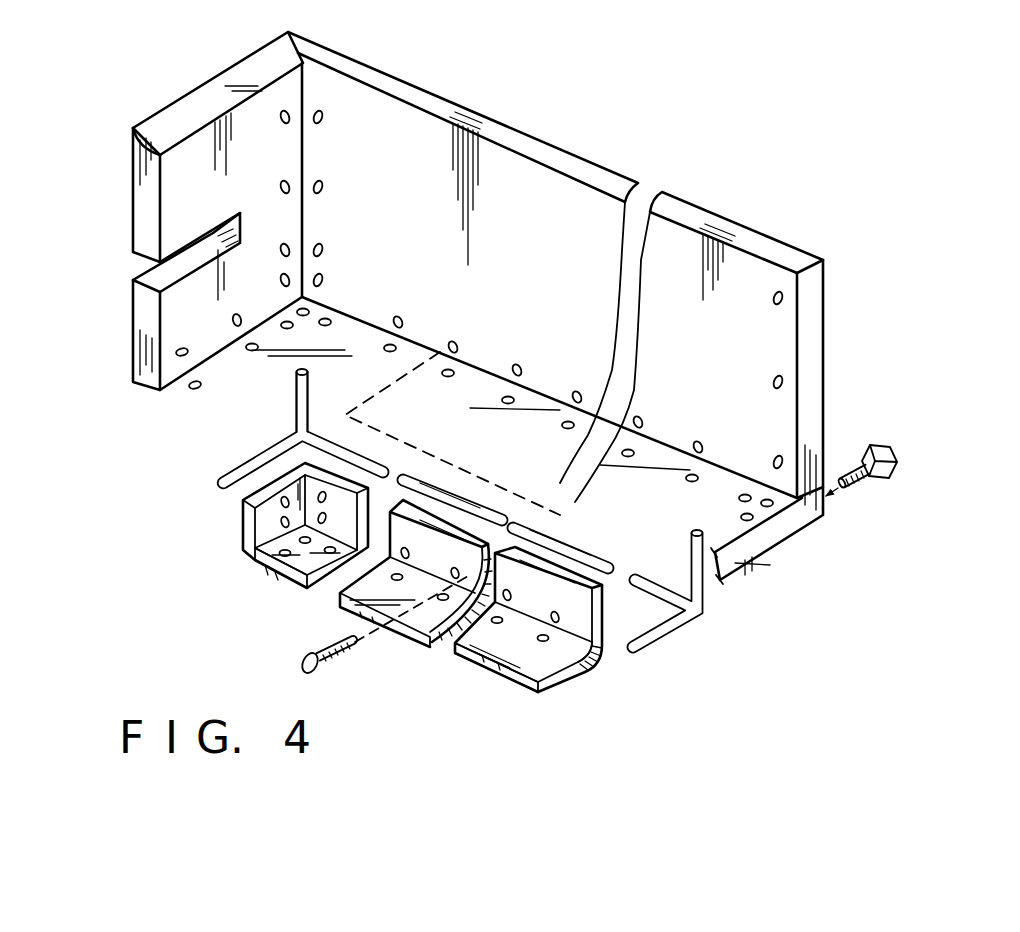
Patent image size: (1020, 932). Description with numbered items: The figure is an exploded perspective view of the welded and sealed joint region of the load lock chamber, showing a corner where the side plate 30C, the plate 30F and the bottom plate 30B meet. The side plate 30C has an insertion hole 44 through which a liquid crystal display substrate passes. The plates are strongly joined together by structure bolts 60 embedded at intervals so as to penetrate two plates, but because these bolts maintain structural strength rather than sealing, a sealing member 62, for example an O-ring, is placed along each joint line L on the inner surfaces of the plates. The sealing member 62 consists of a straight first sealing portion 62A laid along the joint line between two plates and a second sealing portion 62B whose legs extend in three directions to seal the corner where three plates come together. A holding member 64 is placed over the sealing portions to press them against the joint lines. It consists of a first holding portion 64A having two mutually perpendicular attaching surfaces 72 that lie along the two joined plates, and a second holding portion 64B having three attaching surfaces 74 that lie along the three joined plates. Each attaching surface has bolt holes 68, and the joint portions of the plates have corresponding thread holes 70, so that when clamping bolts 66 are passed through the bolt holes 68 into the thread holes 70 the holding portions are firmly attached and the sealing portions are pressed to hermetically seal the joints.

The side plate 30C is at (210, 78).
The plate 30F is at (578, 149).
The bottom plate 30B is at (762, 562).
The insertion hole 44 is at (138, 267).
The thread holes 70 is at (401, 315).
The joint line L is at (313, 151).
The sealing member 62 is at (225, 475).
The first sealing portion 62A is at (596, 552).
The second sealing portion 62B is at (295, 395).
The attaching surfaces 74 is at (236, 522).
The holding member 64 is at (483, 686).
The first holding portion 64A is at (549, 663).
The second holding portion 64B is at (273, 556).
The attaching surfaces 72 is at (606, 630).
The bolt holes 68 is at (282, 525).
The clamping bolts 66 is at (302, 660).
The structure bolts 60 is at (890, 481).